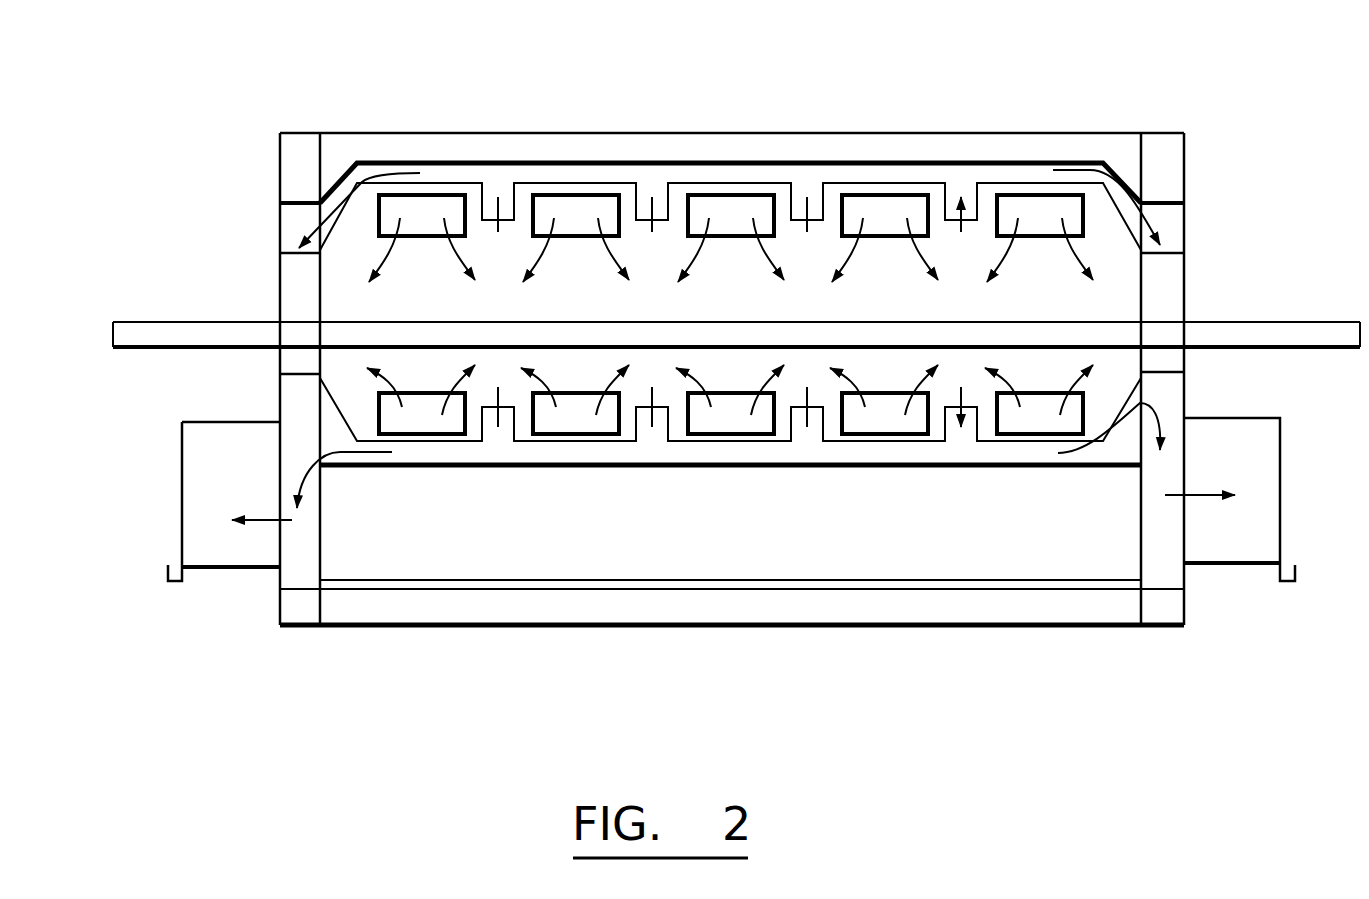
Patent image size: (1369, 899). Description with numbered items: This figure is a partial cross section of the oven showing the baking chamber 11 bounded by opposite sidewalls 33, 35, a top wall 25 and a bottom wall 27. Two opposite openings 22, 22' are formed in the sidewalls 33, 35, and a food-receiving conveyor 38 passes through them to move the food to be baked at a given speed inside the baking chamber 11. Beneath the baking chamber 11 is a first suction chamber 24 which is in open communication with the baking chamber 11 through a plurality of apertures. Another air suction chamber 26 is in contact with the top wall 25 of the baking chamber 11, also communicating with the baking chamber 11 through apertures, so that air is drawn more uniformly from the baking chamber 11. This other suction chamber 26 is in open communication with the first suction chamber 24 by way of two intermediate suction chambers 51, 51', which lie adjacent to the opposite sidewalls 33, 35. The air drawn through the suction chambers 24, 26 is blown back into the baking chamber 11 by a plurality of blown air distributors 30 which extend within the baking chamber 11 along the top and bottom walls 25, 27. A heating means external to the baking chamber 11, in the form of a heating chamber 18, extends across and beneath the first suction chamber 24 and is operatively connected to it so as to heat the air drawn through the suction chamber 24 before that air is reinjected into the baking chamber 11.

The baking chamber 11 is at (661, 289).
The heating chamber 18 is at (450, 547).
The opening 22 is at (1214, 300).
The opening 22' is at (247, 303).
The first suction chamber 24 is at (722, 452).
The top wall 25 is at (722, 135).
The other air suction chamber 26 is at (498, 193).
The bottom wall 27 is at (850, 607).
The blown air distributors 30 is at (740, 198).
The sidewall 33 is at (1170, 158).
The sidewall 35 is at (287, 158).
The food-receiving conveyor 38 is at (135, 330).
The intermediate suction chamber 51 is at (1230, 534).
The intermediate suction chamber 51' is at (230, 536).